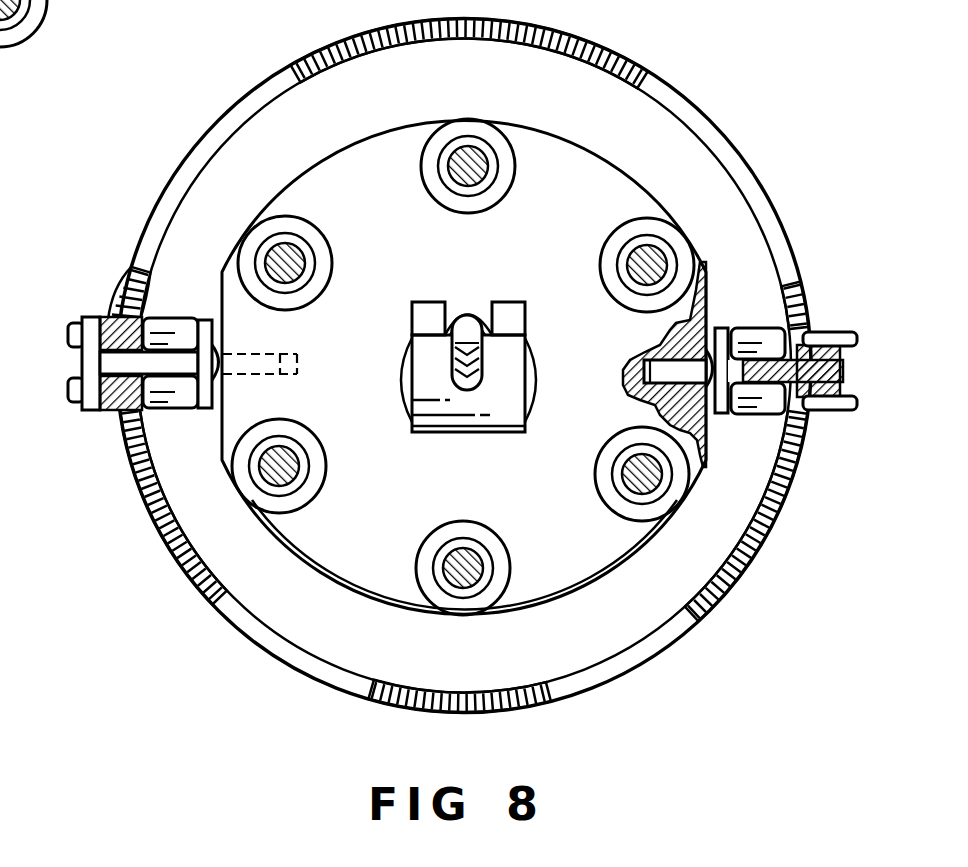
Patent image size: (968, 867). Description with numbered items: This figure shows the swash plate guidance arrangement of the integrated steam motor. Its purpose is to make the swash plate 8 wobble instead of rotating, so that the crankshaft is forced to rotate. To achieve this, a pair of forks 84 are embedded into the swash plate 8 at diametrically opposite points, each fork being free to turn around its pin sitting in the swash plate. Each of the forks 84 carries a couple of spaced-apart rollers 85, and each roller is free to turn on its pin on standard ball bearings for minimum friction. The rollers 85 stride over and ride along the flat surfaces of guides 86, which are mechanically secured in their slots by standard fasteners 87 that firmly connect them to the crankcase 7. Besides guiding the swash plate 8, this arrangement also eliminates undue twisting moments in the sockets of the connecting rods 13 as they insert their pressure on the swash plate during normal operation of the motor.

The crankcase 7 is at (803, 290).
The swash plate 8 is at (618, 193).
The connecting rods 13 is at (660, 265).
The forks 84 is at (718, 405).
The rollers 85 is at (757, 333).
The guides 86 is at (848, 378).
The fasteners 87 is at (853, 411).